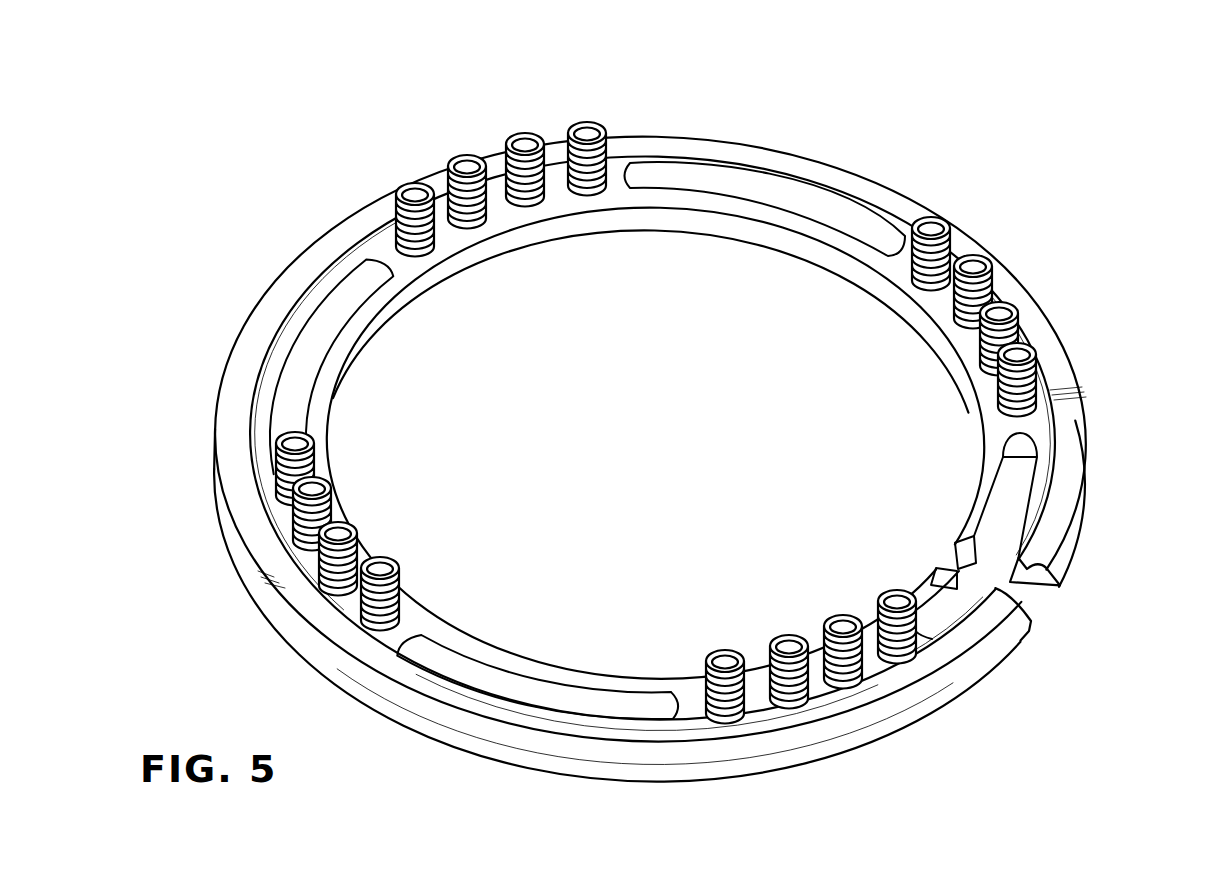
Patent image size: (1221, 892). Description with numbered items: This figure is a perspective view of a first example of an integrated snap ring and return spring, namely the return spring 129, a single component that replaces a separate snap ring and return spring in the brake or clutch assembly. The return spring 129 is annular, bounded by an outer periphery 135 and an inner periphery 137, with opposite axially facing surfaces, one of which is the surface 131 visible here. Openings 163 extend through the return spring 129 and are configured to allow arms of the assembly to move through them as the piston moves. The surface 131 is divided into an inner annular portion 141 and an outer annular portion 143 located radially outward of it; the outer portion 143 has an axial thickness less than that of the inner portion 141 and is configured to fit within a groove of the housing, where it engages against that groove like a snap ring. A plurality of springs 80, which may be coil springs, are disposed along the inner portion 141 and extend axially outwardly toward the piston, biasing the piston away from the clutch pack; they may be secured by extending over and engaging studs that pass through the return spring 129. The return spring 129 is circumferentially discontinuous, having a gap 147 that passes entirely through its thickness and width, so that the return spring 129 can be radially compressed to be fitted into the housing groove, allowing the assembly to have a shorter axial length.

The return spring 129 is at (960, 94).
The axially facing surface 131 is at (371, 230).
The openings 163 is at (328, 333).
The inner periphery 137 is at (625, 218).
The springs 80 is at (1042, 346).
The inner annular portion 141 is at (1040, 413).
The outer annular portion 143 is at (1071, 495).
The gap 147 is at (1027, 602).
The outer periphery 135 is at (903, 724).